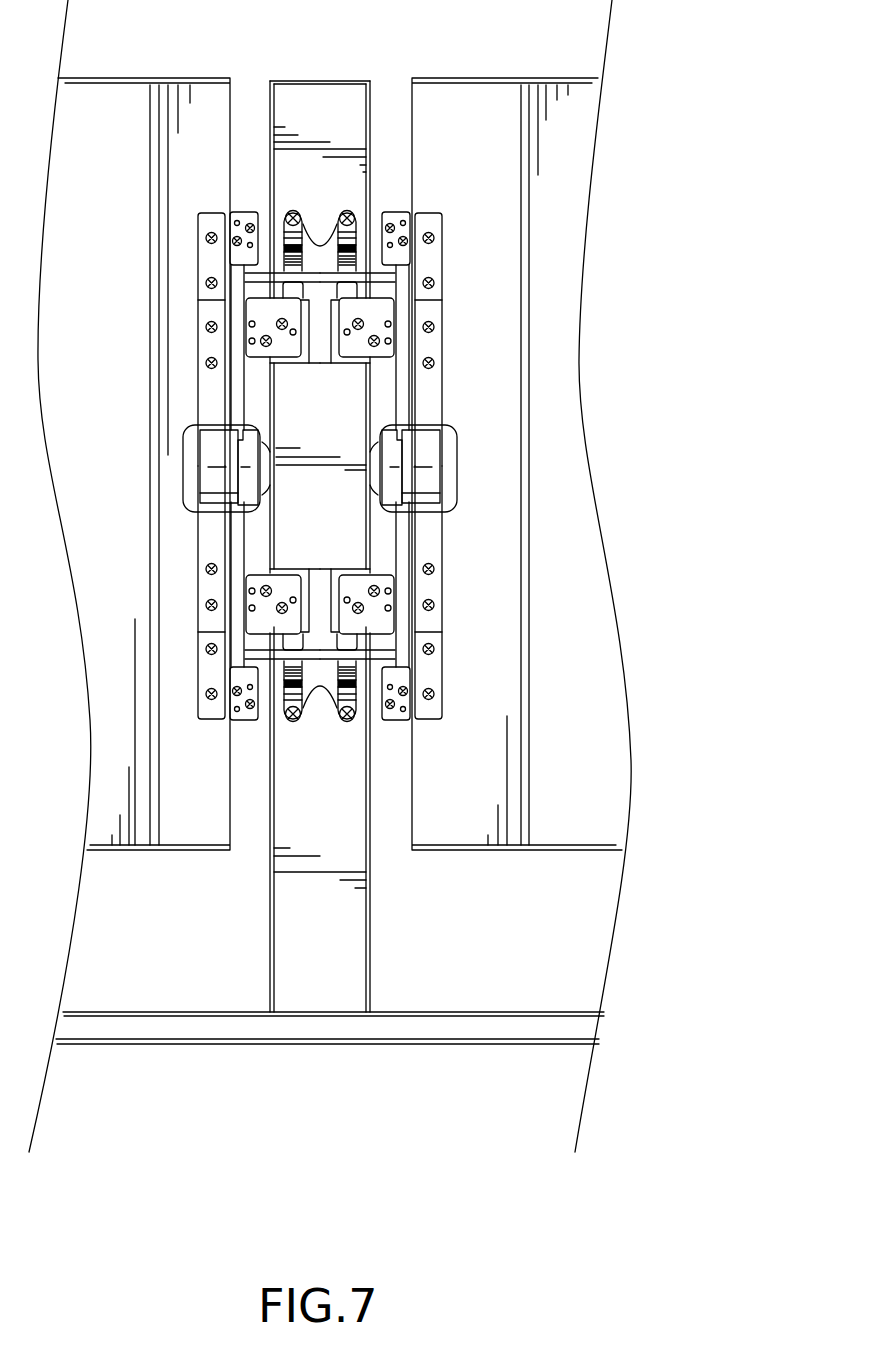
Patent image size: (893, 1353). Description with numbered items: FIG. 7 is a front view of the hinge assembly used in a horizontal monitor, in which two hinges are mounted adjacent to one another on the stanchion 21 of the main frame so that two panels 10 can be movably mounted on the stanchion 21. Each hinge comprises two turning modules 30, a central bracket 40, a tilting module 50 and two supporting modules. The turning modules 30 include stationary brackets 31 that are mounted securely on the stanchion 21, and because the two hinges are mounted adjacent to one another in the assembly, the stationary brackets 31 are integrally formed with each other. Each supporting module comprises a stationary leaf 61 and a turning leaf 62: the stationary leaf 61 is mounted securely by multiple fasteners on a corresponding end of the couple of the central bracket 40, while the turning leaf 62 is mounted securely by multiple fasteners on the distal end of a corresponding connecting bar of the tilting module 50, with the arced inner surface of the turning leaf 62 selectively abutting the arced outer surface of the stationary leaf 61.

The panel 10 is at (605, 772).
The stanchion 21 is at (297, 95).
The turning module 30 is at (343, 193).
The stationary bracket 31 is at (293, 210).
The central bracket 40 is at (392, 477).
The tilting module 50 is at (423, 480).
The stationary leaf 61 is at (353, 353).
The turning leaf 62 is at (397, 212).